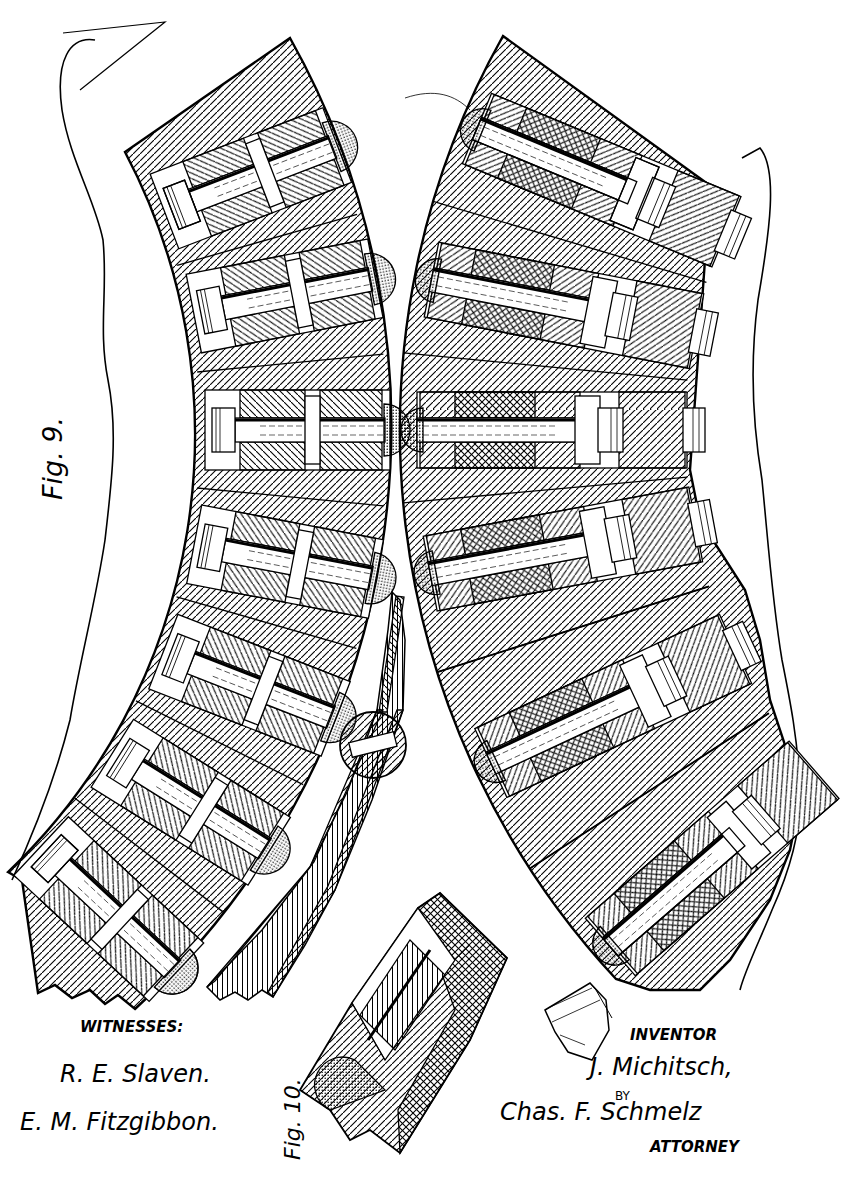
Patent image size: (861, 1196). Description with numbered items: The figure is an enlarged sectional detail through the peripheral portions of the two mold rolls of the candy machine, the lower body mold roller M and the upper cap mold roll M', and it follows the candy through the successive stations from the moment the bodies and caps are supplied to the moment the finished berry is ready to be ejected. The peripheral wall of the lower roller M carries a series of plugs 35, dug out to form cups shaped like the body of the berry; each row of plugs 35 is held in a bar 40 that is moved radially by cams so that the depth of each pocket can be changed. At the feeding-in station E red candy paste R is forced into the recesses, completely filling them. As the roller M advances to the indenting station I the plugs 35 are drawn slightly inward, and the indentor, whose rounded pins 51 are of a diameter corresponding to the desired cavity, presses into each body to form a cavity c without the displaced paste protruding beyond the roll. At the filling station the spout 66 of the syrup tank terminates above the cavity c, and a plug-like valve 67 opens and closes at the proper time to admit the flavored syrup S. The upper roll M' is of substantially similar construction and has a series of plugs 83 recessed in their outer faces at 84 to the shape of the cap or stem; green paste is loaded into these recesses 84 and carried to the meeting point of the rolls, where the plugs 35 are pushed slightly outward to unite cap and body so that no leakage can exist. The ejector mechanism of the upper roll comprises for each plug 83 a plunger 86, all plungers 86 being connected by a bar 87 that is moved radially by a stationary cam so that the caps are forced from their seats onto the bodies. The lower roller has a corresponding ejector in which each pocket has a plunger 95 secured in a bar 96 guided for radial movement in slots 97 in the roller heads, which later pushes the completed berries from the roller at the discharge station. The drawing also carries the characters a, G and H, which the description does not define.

In FIG. 9, the upper mold roll M' is at (199, 523).
In FIG. 9, the lower mold roller M is at (600, 513).
In FIG. 10, the lower mold roller M is at (332, 1040).
In FIG. 9, the plugs 83 is at (296, 58).
In FIG. 9, the recesses 84 is at (322, 112).
In FIG. 9, the plunger 86 is at (262, 135).
In FIG. 9, the bar 87 is at (180, 175).
In FIG. 9, the plug face a is at (168, 960).
In FIG. 9, the plunger 95 is at (545, 135).
In FIG. 10, the plunger 95 is at (381, 967).
In FIG. 9, the bar 96 is at (670, 215).
In FIG. 9, the slots 97 is at (648, 195).
In FIG. 10, the slots 97 is at (452, 925).
In FIG. 9, the bar 40 is at (590, 150).
In FIG. 10, the bar 40 is at (400, 975).
In FIG. 9, the plugs 35 is at (490, 775).
In FIG. 9, the cavity c is at (462, 720).
In FIG. 9, the red candy paste R is at (455, 115).
In FIG. 9, the gate G is at (428, 108).
In FIG. 9, the syrup S is at (370, 800).
In FIG. 9, the rod H is at (395, 648).
In FIG. 9, the spout 66 is at (345, 820).
In FIG. 9, the valve 67 is at (395, 770).
In FIG. 9, the pins 51 is at (568, 998).
In FIG. 9, the indenting station I is at (560, 1035).
In FIG. 10, the feeding-in station E is at (403, 1028).